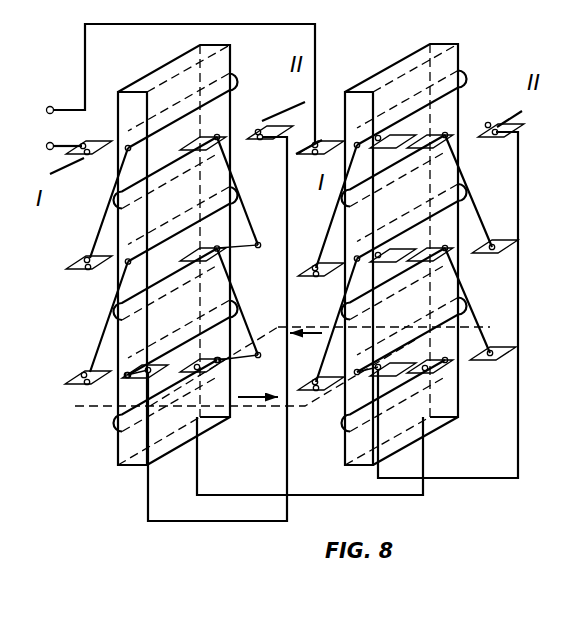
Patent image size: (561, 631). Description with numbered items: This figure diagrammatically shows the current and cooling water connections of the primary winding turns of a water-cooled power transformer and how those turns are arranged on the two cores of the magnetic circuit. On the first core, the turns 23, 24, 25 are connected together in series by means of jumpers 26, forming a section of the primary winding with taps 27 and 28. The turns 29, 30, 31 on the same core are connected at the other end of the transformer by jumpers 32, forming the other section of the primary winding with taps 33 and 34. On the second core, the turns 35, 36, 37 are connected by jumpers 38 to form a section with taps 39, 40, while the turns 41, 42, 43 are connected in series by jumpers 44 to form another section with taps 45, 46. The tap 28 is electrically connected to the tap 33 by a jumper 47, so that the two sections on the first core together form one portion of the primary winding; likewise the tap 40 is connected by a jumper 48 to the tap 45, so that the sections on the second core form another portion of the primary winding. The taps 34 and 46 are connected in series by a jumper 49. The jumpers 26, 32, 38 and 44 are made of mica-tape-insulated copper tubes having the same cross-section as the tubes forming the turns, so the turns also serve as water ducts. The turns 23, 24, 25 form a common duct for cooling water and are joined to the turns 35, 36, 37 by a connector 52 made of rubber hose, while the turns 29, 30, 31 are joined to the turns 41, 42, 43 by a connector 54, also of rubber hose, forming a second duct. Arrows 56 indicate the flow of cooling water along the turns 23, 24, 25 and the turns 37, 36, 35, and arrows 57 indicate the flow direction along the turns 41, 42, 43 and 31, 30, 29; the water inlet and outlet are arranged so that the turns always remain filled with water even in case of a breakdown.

The turn 23 is at (236, 80).
The turn 24 is at (236, 192).
The turn 25 is at (225, 308).
The jumper 26 is at (104, 214).
The tap 27 is at (100, 140).
The tap 28 is at (160, 362).
The turn 29 is at (128, 206).
The turn 30 is at (121, 313).
The turn 31 is at (118, 428).
The jumper 32 is at (243, 206).
The tap 33 is at (256, 139).
The tap 34 is at (208, 365).
The turn 35 is at (461, 78).
The turn 36 is at (461, 186).
The turn 37 is at (456, 312).
The jumper 38 is at (342, 192).
The tap 39 is at (316, 140).
The tap 40 is at (365, 374).
The turn 41 is at (350, 207).
The turn 42 is at (350, 320).
The turn 43 is at (348, 438).
The jumper 44 is at (463, 178).
The tap 45 is at (495, 135).
The tap 46 is at (436, 366).
The jumper 47 is at (230, 522).
The jumper 48 is at (456, 478).
The jumper 49 is at (312, 495).
The connector 52 is at (262, 408).
The connector 54 is at (499, 326).
The arrows 56 is at (66, 170).
The arrows 57 is at (268, 118).